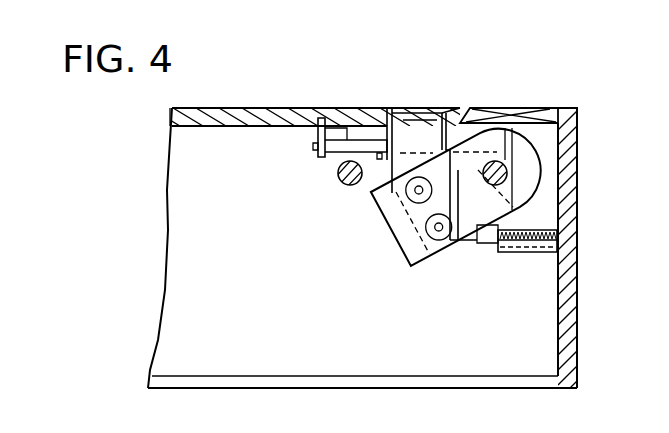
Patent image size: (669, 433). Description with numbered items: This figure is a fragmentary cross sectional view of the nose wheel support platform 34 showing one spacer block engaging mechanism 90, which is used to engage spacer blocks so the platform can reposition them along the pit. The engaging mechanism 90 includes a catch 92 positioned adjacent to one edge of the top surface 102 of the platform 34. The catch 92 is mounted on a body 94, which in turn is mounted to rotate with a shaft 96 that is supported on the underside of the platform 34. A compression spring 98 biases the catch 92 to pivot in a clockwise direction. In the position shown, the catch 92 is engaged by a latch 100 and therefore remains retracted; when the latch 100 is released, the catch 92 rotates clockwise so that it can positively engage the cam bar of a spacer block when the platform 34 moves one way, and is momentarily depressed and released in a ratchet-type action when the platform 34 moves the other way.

The nose wheel support platform 34 is at (252, 108).
The spacer block engaging mechanism 90 is at (440, 80).
The catch 92 is at (438, 108).
The body 94 is at (460, 242).
The shaft 96 is at (508, 180).
The compression spring 98 is at (532, 238).
The latch 100 is at (325, 180).
The top surface 102 is at (537, 108).